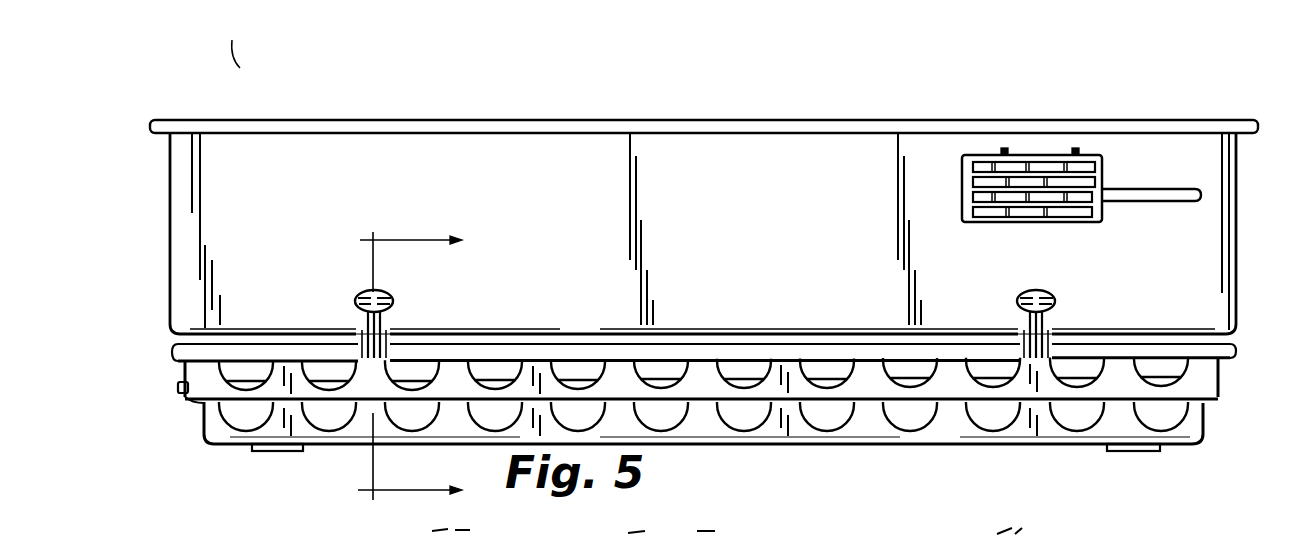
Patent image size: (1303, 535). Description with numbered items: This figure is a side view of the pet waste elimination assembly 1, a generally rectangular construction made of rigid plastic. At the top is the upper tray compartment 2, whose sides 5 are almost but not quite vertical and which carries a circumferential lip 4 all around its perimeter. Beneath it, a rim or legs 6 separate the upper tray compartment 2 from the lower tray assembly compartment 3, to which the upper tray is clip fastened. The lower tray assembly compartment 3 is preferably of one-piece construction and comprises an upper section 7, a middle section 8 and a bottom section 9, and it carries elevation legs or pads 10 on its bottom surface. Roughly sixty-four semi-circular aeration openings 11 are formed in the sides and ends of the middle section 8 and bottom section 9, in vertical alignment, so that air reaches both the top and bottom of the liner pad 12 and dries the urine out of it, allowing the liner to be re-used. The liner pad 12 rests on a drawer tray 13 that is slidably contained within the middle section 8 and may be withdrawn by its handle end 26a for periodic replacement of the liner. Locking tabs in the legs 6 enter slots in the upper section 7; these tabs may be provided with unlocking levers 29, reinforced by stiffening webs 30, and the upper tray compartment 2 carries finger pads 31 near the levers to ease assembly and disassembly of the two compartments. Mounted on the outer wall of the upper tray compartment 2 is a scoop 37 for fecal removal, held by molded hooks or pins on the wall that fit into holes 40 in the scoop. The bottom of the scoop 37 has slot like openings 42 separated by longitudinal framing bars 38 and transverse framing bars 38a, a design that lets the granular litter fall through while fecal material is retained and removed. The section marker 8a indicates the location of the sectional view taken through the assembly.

The assembly 1 is at (600, 80).
The upper tray compartment 2 is at (753, 145).
The lower tray assembly compartment 3 is at (1260, 337).
The circumferential lip 4 is at (844, 130).
The sides 5 is at (375, 150).
The legs 6 is at (1236, 338).
The upper section 7 is at (1232, 352).
The middle section 8 is at (1218, 379).
The section line 8a is at (410, 358).
The bottom section 9 is at (1200, 419).
The elevation legs 10 is at (1152, 449).
The aeration openings 11 is at (581, 362).
The liner pad 12 is at (667, 366).
The drawer tray 13 is at (179, 383).
The handle end 26a is at (188, 401).
The unlocking levers 29 is at (386, 332).
The stiffening webs 30 is at (362, 321).
The finger pads 31 is at (391, 291).
The scoop 37 is at (1036, 156).
The longitudinal framing bars 38 is at (1018, 201).
The transverse framing bars 38a is at (1077, 205).
The holes 40 is at (1005, 148).
The slot like openings 42 is at (1095, 182).